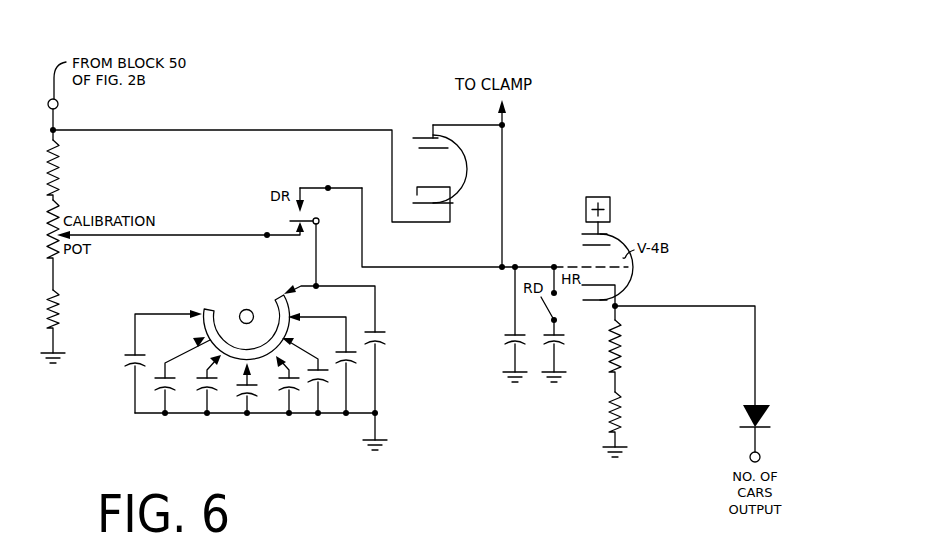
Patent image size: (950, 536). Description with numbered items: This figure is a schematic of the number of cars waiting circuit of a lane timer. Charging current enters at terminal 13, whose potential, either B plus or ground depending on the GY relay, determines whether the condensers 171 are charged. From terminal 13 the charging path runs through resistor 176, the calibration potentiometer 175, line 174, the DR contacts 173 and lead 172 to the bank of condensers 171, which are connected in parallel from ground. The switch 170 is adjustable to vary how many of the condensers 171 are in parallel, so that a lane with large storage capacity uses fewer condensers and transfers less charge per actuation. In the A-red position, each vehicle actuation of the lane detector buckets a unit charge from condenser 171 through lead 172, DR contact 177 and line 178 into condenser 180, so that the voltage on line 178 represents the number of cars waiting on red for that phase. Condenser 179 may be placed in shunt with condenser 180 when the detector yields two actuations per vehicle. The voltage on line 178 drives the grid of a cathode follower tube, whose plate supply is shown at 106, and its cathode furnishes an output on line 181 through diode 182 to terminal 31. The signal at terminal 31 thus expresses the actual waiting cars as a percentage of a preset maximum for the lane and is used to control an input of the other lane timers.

The terminal 13 is at (58, 104).
The resistor 176 is at (58, 163).
The calibration potentiometer 175 is at (41, 281).
The line 174 is at (216, 236).
The DR contacts 173 is at (291, 221).
The DR contact 177 is at (311, 187).
The lead 172 is at (312, 258).
The switch 170 is at (222, 312).
The condensers 171 is at (128, 358).
The line 178 is at (439, 266).
The positive supply 106 is at (611, 212).
The condenser 180 is at (505, 340).
The condenser 179 is at (565, 340).
The line 181 is at (678, 306).
The diode 182 is at (743, 411).
The terminal 31 is at (750, 458).